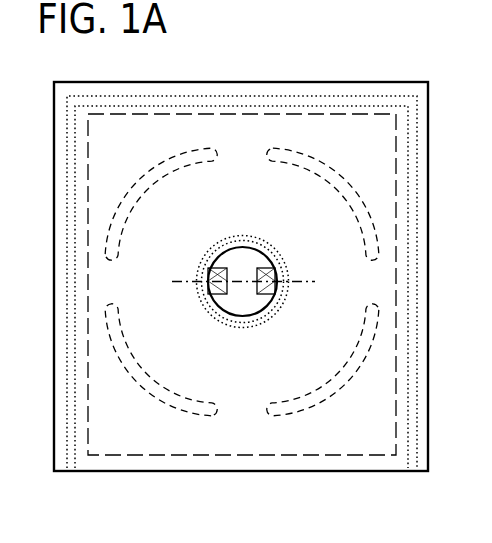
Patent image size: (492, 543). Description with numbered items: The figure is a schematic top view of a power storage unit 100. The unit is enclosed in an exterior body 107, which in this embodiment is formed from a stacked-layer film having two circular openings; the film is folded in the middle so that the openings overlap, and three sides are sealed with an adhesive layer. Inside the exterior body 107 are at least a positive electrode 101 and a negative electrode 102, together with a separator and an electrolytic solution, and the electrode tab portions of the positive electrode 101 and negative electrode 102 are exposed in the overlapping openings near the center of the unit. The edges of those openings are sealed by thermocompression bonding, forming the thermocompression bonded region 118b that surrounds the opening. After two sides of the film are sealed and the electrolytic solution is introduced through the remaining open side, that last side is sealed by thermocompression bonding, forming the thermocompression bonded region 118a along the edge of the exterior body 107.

The power storage unit 100 is at (102, 65).
The positive electrode 101 is at (228, 296).
The negative electrode 102 is at (264, 281).
The exterior body 107 is at (192, 86).
The thermocompression bonded region 118a is at (417, 454).
The thermocompression bonded region 118b is at (278, 308).